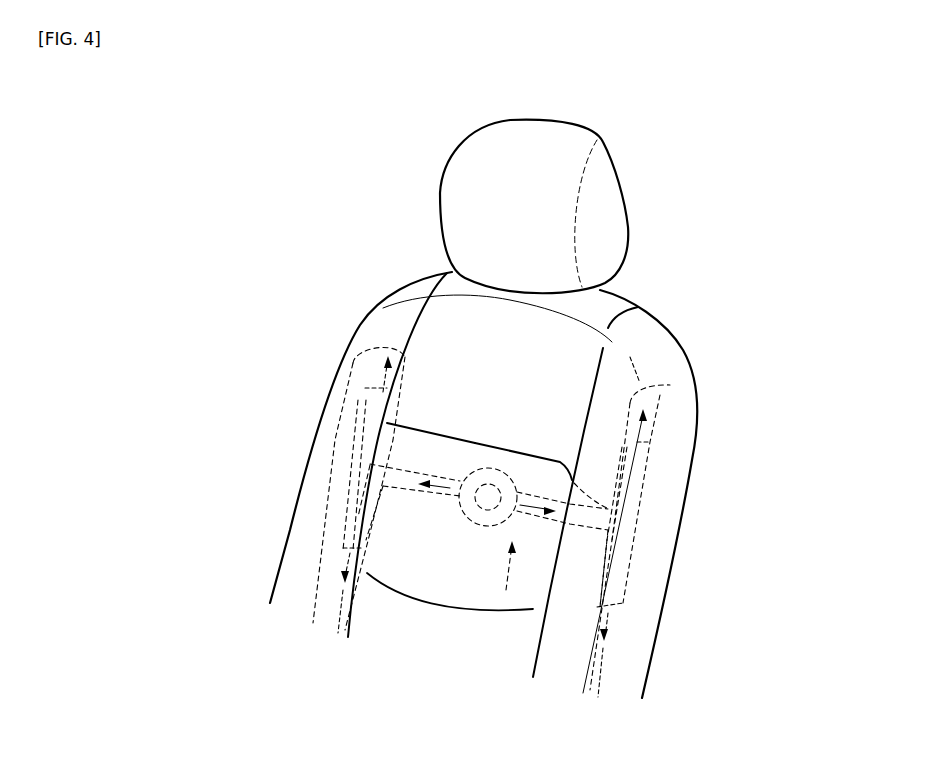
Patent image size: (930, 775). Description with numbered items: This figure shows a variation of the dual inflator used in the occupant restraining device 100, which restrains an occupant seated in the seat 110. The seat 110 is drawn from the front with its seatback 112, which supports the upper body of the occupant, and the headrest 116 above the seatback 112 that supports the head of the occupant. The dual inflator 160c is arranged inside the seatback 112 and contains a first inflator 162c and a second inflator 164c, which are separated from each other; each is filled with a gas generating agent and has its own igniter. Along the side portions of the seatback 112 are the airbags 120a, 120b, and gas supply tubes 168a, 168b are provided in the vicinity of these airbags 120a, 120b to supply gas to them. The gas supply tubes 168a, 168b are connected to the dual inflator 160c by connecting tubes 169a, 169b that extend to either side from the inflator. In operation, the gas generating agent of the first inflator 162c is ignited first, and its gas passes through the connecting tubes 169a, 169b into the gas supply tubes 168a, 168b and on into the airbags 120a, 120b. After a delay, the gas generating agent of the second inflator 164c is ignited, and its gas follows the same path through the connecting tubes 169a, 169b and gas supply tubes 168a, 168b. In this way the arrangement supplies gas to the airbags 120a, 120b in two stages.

The occupant restraining device 100 is at (357, 193).
The seat 110 is at (695, 302).
The seatback 112 is at (690, 447).
The headrest 116 is at (550, 140).
The airbag 120a is at (670, 385).
The airbag 120b is at (377, 347).
The dual inflator 160c is at (506, 590).
The first inflator 162c is at (487, 467).
The second inflator 164c is at (480, 523).
The gas supply tube 168a is at (607, 508).
The gas supply tube 168b is at (345, 516).
The connecting tube 169a is at (561, 461).
The connecting tube 169b is at (410, 468).